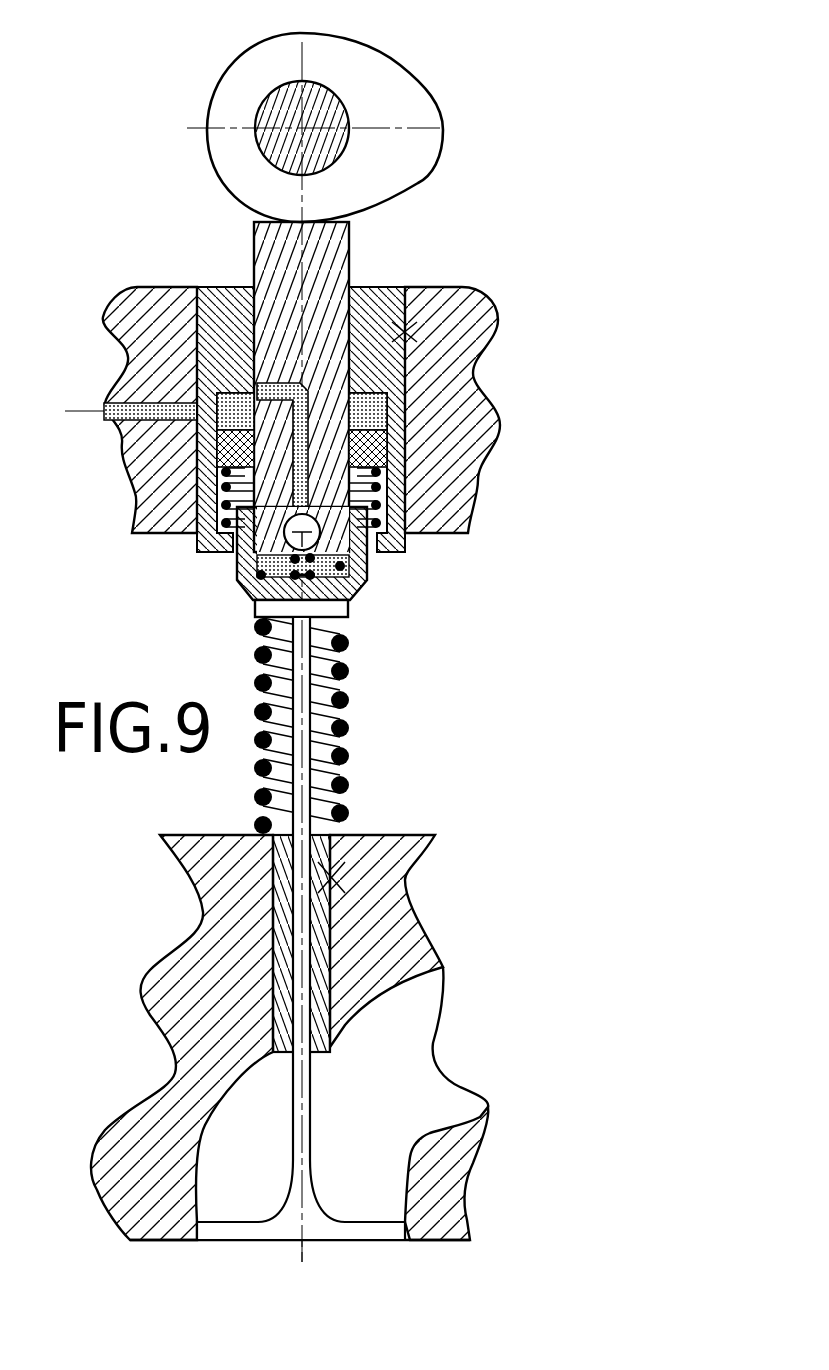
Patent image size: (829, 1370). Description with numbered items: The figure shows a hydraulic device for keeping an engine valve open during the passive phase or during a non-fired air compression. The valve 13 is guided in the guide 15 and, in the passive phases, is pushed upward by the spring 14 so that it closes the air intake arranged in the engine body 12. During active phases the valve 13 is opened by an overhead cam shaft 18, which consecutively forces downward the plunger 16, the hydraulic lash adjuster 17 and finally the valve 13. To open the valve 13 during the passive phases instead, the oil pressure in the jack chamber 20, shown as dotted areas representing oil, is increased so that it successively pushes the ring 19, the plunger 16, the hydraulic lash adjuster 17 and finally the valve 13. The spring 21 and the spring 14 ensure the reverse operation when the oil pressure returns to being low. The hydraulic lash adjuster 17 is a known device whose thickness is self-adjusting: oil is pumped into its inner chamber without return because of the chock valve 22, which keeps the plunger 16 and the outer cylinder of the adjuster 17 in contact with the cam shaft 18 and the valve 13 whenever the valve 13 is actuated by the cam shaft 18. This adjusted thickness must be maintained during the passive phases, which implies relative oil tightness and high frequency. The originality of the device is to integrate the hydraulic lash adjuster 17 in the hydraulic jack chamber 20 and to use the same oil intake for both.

The engine body 12 is at (443, 420).
The valve 13 is at (302, 1117).
The spring 14 is at (347, 733).
The guide 15 is at (323, 933).
The plunger 16 is at (328, 477).
The hydraulic lash adjuster 17 is at (363, 593).
The overhead cam shaft 18 is at (395, 165).
The ring 19 is at (372, 440).
The jack chamber 20 is at (373, 406).
The spring 21 is at (443, 535).
The chock valve 22 is at (347, 553).